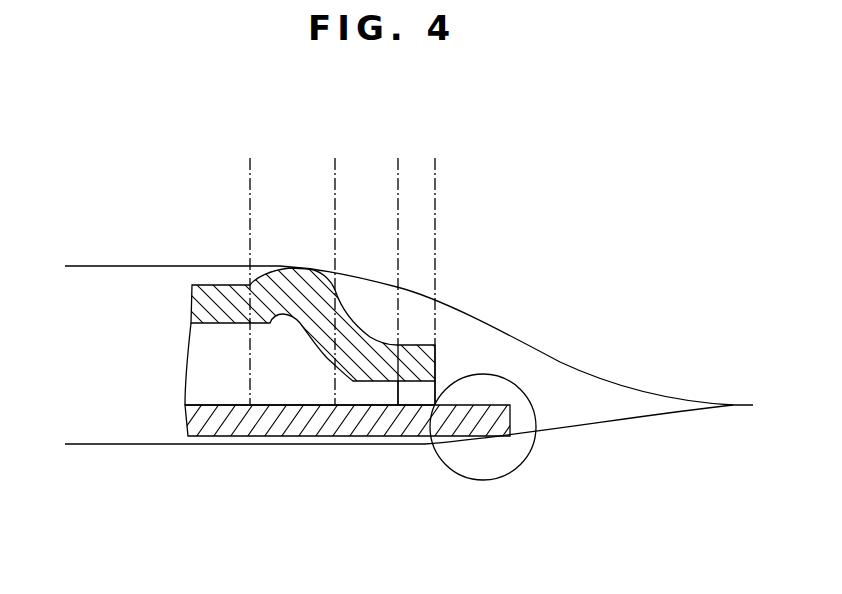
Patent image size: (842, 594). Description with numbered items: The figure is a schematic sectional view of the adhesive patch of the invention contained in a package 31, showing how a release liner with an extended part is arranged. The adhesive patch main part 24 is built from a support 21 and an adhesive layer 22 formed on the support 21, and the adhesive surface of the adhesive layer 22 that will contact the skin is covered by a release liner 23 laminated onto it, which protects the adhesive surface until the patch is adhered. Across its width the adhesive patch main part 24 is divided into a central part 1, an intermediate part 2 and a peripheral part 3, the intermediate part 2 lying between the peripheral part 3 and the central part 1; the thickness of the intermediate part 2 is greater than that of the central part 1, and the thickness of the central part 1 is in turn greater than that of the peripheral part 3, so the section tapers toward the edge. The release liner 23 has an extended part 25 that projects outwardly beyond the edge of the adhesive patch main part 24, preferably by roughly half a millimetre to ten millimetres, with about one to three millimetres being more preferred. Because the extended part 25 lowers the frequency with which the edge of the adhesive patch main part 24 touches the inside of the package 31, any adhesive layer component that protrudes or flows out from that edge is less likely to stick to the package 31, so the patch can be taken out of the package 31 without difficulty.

The central part 1 is at (178, 207).
The intermediate part 2 is at (250, 207).
The peripheral part 3 is at (398, 207).
The support 21 is at (203, 304).
The adhesive layer 22 is at (203, 358).
The release liner 23 is at (200, 424).
The adhesive patch main part 24 is at (98, 292).
The extended part 25 is at (505, 478).
The package 31 is at (610, 422).